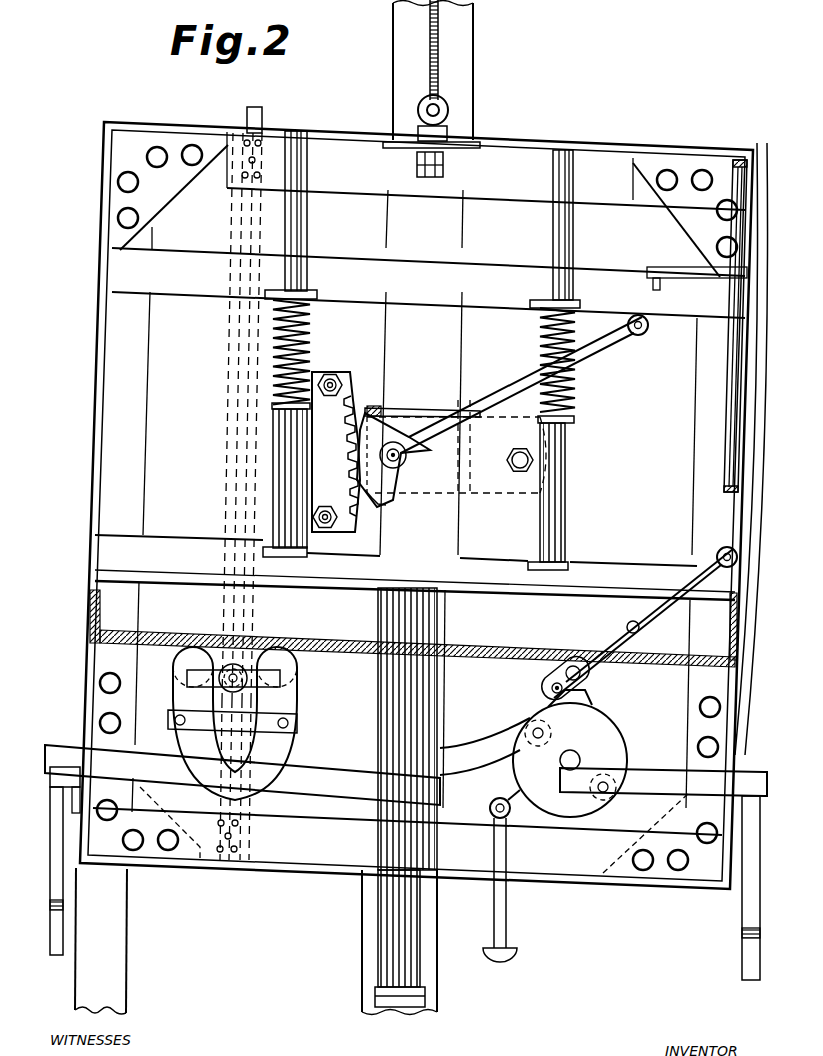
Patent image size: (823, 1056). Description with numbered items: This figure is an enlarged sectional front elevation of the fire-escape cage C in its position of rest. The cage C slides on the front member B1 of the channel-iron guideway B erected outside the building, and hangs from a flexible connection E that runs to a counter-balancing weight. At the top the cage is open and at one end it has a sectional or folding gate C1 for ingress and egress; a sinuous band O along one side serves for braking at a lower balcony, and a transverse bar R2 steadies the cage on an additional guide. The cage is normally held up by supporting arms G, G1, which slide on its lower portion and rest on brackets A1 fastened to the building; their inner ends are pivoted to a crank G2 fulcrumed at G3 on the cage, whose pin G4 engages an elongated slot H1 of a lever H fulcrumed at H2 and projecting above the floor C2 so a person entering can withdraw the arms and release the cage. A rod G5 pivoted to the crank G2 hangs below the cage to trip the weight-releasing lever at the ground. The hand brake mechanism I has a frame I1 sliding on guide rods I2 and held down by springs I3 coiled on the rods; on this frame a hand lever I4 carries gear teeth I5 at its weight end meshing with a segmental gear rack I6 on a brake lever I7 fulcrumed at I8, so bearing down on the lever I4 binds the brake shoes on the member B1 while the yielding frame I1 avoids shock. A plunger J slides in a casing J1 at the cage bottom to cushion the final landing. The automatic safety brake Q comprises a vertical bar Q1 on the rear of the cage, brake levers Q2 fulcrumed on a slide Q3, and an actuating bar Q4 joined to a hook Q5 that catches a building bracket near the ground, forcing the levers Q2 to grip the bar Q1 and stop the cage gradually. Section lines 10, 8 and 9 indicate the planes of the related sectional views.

The cage C is at (414, 551).
The guideway B is at (393, 75).
The flexible connection E is at (430, 30).
The hook Q5 is at (260, 118).
The vertically extending bar Q1 is at (233, 421).
The guide rods I2 is at (305, 239).
The springs I3 is at (308, 336).
The brake mechanism I is at (418, 471).
The segmental gear rack I6 is at (345, 461).
The gear teeth I5 is at (380, 507).
The hand lever I4 is at (617, 346).
The brake lever I7 is at (395, 409).
The frame I1 is at (520, 500).
The fulcrum of brake lever I8 is at (508, 461).
The front member of guideway B1 is at (462, 345).
The casing J1 is at (380, 707).
The plunger J is at (390, 910).
The folding gate C1 is at (733, 413).
The sinuous band O is at (764, 494).
The floor of cage C2 is at (500, 643).
The lever H is at (620, 628).
The fulcrum of lever H2 is at (698, 595).
The pin G4 is at (560, 668).
The elongated slot H1 is at (552, 690).
The crank G2 is at (606, 722).
The fulcrum of crank G3 is at (560, 766).
The supporting arm G is at (658, 779).
The supporting arm G1 is at (52, 748).
The rod G5 is at (506, 925).
The automatic safety brake mechanism Q is at (218, 723).
The brake levers Q2 is at (183, 700).
The actuating bar Q4 is at (280, 678).
The slide Q3 is at (232, 733).
The transverse bar R2 is at (60, 826).
The brackets A1 is at (50, 860).
The section line 10- 10 is at (125, 330).
The section line 8- 8 is at (107, 650).
The section line 9- 9 is at (400, 1018).